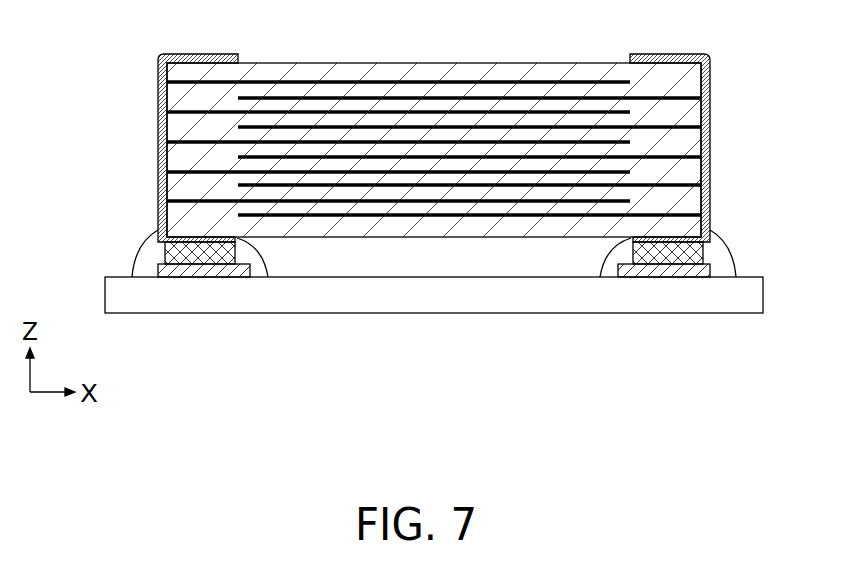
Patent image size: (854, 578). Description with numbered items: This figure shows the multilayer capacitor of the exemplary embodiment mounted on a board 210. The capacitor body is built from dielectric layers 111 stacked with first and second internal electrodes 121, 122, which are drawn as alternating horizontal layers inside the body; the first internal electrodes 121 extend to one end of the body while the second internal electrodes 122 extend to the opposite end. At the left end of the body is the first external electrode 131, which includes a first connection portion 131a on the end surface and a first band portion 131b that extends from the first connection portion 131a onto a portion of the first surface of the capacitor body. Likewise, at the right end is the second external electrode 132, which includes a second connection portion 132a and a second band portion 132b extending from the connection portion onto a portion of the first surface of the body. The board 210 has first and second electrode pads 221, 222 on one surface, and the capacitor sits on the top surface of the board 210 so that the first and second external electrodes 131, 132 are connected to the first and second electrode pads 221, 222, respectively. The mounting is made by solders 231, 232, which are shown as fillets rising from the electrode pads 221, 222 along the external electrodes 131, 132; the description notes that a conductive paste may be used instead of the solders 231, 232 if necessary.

The dielectric layer 111 is at (693, 77).
The first internal electrode 121 is at (297, 82).
The second internal electrode 122 is at (483, 97).
The first external electrode 131 is at (131, 159).
The first connection portion 131a is at (158, 166).
The first band portion 131b is at (190, 238).
The second external electrode 132 is at (738, 159).
The second connection portion 132a is at (710, 166).
The second band portion 132b is at (678, 238).
The board 210 is at (455, 302).
The first electrode pad 221 is at (199, 272).
The second electrode pad 222 is at (675, 272).
The solder 231 is at (140, 250).
The solder 232 is at (733, 250).